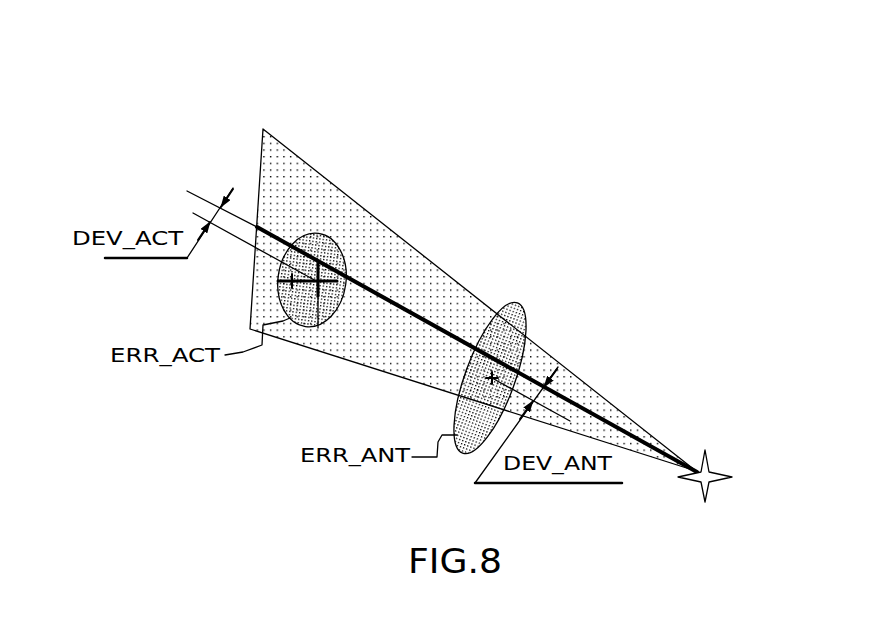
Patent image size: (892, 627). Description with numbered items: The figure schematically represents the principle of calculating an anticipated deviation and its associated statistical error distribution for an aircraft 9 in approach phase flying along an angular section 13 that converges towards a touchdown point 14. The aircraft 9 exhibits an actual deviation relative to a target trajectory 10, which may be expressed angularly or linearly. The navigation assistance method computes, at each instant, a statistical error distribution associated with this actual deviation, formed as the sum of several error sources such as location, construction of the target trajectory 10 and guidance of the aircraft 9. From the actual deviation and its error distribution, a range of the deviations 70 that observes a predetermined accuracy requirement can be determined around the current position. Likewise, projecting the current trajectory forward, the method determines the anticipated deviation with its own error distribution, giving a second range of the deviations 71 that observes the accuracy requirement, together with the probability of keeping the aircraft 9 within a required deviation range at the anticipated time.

The angular section 13 is at (292, 168).
The range of the deviations 70 is at (340, 235).
The target trajectory 10 is at (412, 313).
The aircraft 9 is at (318, 328).
The range of the deviations 71 is at (532, 310).
The touchdown point 14 is at (720, 470).